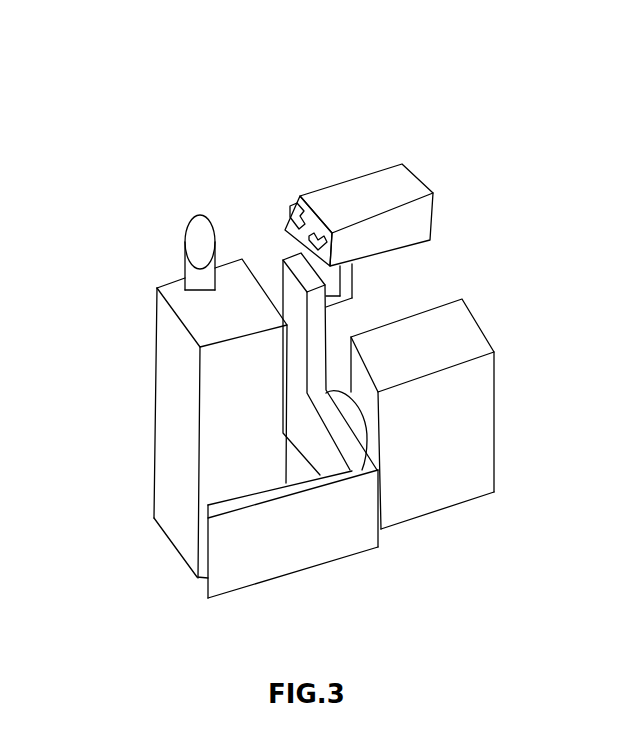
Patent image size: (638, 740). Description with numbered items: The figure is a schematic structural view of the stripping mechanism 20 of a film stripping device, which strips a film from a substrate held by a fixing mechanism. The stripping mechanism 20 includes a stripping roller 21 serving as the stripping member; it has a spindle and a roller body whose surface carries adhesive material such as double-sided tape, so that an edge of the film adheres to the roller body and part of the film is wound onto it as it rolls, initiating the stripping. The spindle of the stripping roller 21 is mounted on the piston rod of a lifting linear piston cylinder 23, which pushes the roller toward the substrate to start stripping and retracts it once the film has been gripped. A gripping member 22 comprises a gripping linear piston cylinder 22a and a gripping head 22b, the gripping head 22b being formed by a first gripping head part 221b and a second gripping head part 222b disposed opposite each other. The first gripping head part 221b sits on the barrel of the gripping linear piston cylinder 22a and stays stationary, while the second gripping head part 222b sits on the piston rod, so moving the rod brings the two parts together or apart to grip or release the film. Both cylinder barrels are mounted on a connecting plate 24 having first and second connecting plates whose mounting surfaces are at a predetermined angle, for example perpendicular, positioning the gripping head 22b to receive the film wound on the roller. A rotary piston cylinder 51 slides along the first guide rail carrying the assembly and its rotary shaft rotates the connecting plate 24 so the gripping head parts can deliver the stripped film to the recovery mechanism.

The stripping mechanism 20 is at (148, 24).
The stripping roller 21 is at (184, 236).
The gripping member 22 is at (363, 74).
The gripping linear piston cylinder 22a is at (362, 175).
The gripping head 22b is at (312, 108).
The first gripping head part 221b is at (288, 218).
The second gripping head part 222b is at (322, 238).
The lifting linear piston cylinder 23 is at (146, 390).
The connecting plate 24 is at (322, 570).
The rotary piston cylinder 51 is at (485, 423).